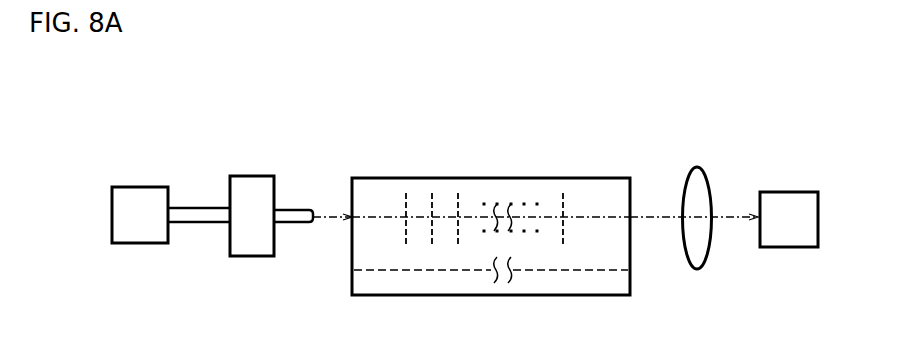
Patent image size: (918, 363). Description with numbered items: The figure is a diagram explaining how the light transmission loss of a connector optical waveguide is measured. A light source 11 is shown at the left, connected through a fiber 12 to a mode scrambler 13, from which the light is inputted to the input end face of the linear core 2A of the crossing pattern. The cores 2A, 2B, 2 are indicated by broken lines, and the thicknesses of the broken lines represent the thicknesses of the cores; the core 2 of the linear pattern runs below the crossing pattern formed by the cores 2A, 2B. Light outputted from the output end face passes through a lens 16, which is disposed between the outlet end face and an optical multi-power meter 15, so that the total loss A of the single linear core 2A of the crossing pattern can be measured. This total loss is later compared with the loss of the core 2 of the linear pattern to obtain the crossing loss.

The core of the linear pattern 2 is at (418, 272).
The linear core of the crossing pattern 2A is at (378, 217).
The core 2B is at (460, 205).
The light source 11 is at (137, 203).
The fiber 12 is at (195, 213).
The mode scrambler 13 is at (254, 190).
The optical multi-power meter 15 is at (792, 207).
The lens 16 is at (700, 185).